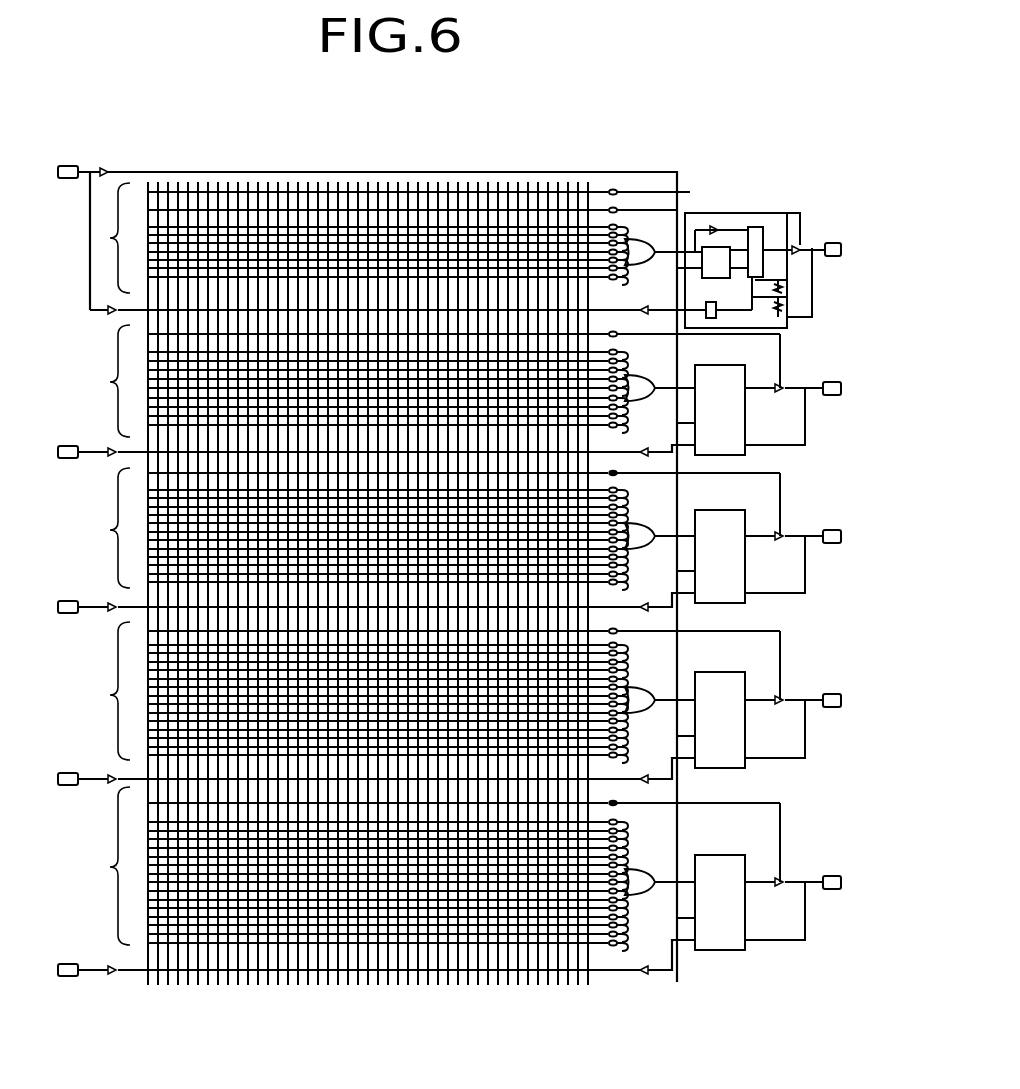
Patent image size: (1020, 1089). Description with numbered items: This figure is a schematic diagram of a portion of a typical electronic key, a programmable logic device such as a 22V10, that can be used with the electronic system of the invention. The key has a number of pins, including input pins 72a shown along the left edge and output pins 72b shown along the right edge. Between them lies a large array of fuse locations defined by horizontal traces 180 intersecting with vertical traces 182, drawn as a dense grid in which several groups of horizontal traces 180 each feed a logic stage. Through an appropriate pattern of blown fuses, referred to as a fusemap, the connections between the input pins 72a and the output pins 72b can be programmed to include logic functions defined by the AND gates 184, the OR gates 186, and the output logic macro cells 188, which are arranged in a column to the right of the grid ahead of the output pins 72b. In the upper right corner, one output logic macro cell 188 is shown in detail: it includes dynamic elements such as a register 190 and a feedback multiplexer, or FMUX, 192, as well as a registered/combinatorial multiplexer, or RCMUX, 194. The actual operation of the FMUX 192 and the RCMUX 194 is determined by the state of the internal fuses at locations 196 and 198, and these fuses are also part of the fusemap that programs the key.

The input pins 72a is at (78, 164).
The output pins 72b is at (841, 249).
The horizontal traces 180 is at (110, 240).
The vertical traces 182 is at (226, 186).
The AND gates 184 is at (617, 165).
The OR gates 186 is at (645, 224).
The output logic macro cells 188 is at (788, 326).
The register 190 is at (720, 255).
The feedback multiplexer (FMUX) 192 is at (708, 320).
The registered/combinatorial multiplexer (RCMUX) 194 is at (765, 232).
The internal fuse location 196 is at (812, 298).
The internal fuse location 198 is at (787, 272).